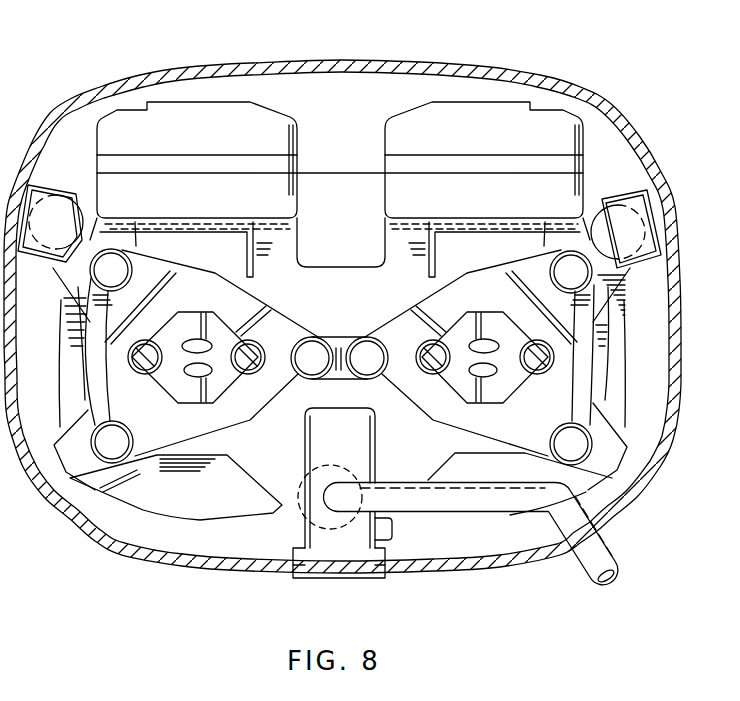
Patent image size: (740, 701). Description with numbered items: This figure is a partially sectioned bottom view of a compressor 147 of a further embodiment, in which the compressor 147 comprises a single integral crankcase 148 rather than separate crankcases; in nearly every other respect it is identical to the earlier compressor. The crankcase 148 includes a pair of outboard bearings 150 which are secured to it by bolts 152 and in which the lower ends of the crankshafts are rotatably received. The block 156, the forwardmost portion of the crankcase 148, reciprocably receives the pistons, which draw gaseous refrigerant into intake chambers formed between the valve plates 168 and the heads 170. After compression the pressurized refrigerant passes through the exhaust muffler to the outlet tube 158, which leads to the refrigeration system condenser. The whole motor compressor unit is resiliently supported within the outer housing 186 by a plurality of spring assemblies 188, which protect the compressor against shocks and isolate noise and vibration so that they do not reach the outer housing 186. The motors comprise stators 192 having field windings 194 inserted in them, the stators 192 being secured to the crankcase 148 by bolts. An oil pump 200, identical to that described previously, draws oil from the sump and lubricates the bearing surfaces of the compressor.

The compressor 147 is at (395, 584).
The crankcase 148 is at (276, 488).
The outboard bearings 150 is at (233, 430).
The bolts 152 is at (100, 283).
The block 156 is at (397, 205).
The outlet tube 158 is at (512, 512).
The valve plates 168 is at (397, 165).
The heads 170 is at (176, 117).
The outer housing 186 is at (442, 568).
The spring assemblies 188 is at (48, 188).
The stators 192 is at (178, 517).
The field windings 194 is at (167, 472).
The oil pump 200 is at (163, 383).